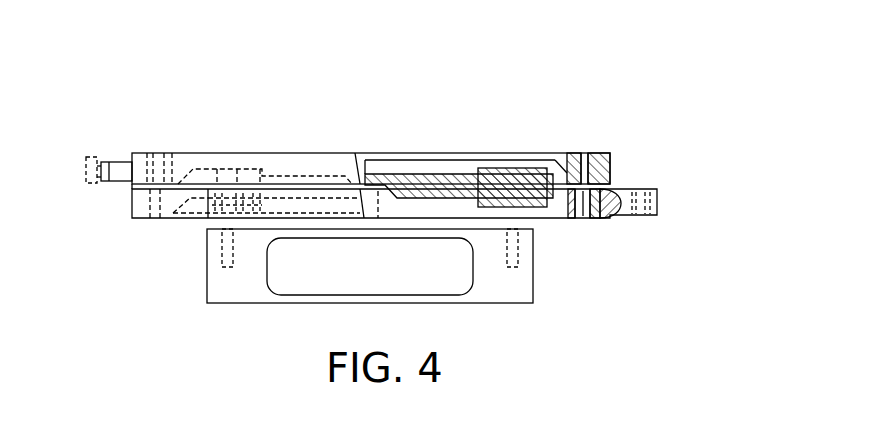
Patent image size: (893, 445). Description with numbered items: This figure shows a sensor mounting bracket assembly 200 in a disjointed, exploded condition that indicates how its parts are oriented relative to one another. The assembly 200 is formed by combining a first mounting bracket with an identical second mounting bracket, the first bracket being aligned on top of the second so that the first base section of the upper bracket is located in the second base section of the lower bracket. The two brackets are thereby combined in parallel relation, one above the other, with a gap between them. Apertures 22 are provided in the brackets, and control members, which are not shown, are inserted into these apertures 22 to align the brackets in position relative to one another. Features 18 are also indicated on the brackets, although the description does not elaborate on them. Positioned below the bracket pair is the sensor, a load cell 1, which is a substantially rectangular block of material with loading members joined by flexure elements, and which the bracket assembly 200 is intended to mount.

The sensor mounting bracket assembly 200 is at (714, 99).
The pin 18 is at (84, 184).
The apertures 22 is at (150, 162).
The load cell 1 is at (513, 293).